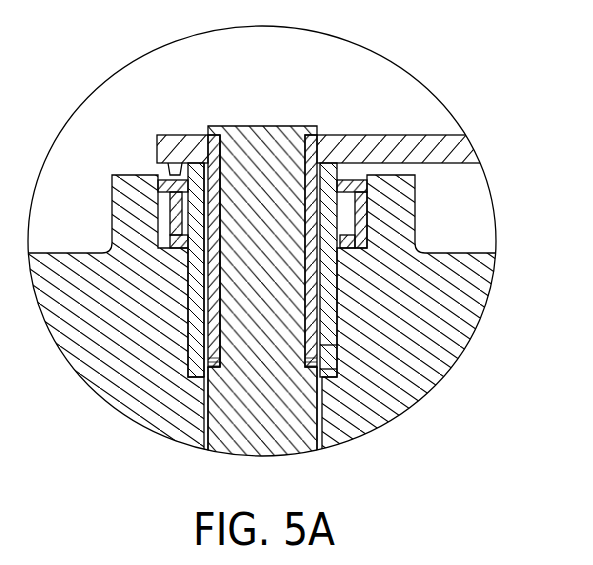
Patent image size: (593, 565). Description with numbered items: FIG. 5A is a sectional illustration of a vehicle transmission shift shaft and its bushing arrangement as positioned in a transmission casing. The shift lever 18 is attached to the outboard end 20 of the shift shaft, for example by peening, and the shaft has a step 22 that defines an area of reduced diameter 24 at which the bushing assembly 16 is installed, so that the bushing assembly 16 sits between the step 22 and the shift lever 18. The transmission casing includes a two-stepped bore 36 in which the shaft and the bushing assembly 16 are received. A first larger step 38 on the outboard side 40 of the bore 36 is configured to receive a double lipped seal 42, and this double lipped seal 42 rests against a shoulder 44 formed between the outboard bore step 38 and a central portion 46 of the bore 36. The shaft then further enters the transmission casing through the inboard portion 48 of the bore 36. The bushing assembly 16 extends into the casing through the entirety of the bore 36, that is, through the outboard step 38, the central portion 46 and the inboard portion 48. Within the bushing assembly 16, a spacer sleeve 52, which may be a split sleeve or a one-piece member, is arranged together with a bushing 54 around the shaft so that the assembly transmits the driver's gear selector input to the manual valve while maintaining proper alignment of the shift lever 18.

The bushing assembly 16 is at (385, 335).
The shift lever 18 is at (447, 152).
The outboard end 20 is at (290, 143).
The step 22 is at (307, 367).
The area of reduced diameter 24 is at (363, 315).
The two-stepped bore 36 is at (333, 290).
The first larger step 38 is at (345, 228).
The outboard side 40 is at (167, 175).
The double lipped seal 42 is at (183, 202).
The shoulder 44 is at (225, 266).
The central portion 46 is at (347, 347).
The inboard portion 48 is at (327, 375).
The spacer sleeve 52 is at (200, 342).
The bushing 54 is at (197, 313).